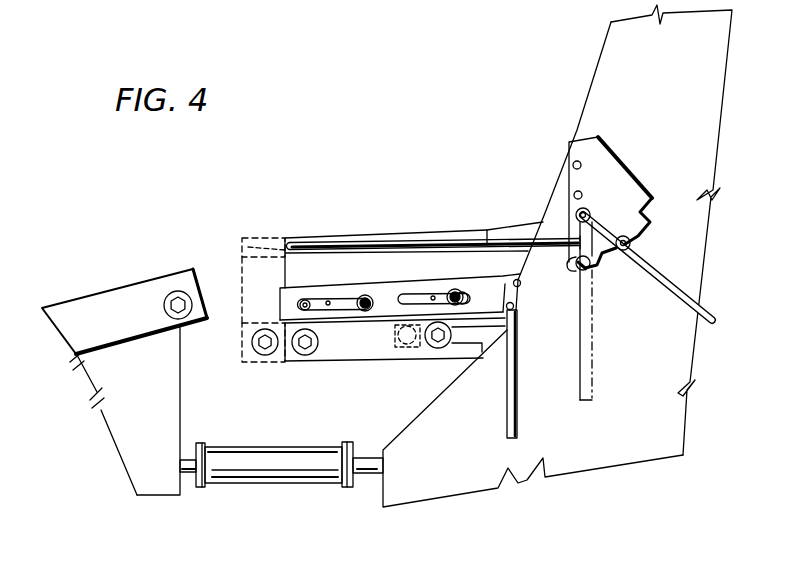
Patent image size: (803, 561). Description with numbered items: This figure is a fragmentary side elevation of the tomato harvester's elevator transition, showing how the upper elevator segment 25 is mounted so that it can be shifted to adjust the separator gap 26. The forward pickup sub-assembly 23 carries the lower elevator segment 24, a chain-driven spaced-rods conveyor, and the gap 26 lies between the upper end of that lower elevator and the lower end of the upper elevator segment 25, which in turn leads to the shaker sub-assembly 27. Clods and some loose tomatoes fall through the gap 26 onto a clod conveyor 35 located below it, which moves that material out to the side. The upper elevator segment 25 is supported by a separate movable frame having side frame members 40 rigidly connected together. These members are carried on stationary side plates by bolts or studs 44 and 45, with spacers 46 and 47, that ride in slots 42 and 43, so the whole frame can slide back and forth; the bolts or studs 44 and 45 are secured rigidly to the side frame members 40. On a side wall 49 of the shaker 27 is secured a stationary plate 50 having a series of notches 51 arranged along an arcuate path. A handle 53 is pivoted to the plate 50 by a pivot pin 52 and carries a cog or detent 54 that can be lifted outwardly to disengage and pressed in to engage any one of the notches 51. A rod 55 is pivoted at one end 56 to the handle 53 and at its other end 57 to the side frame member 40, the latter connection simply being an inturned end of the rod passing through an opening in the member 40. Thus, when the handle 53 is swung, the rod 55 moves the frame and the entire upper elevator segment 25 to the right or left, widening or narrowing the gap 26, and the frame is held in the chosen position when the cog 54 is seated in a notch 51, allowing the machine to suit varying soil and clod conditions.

The forward pickup sub-assembly 23 is at (117, 380).
The lower elevator segment 24 is at (137, 292).
The upper elevator segment 25 is at (352, 228).
The separator gap 26 is at (218, 281).
The shaker sub-assembly 27 is at (590, 72).
The clod conveyor 35 is at (250, 450).
The side frame member 40 is at (430, 237).
The slot 42 is at (325, 300).
The slot 43 is at (435, 296).
The bolt or stud 44 is at (367, 297).
The bolt or stud 45 is at (468, 275).
The spacer 46 is at (370, 297).
The spacer 47 is at (463, 296).
The side wall 49 is at (681, 74).
The stationary plate 50 is at (607, 157).
The notches 51 is at (657, 212).
The pivot pin 52 is at (590, 210).
The handle 53 is at (667, 283).
The cog or detent 54 is at (632, 242).
The rod 55 is at (493, 237).
The rod end 56 is at (572, 276).
The rod end 57 is at (290, 241).